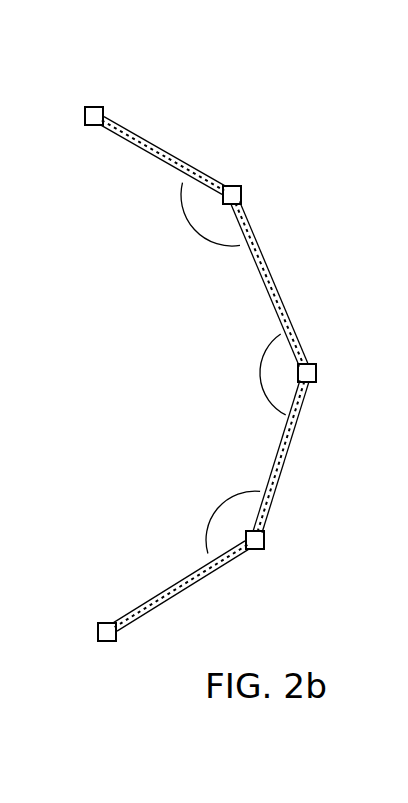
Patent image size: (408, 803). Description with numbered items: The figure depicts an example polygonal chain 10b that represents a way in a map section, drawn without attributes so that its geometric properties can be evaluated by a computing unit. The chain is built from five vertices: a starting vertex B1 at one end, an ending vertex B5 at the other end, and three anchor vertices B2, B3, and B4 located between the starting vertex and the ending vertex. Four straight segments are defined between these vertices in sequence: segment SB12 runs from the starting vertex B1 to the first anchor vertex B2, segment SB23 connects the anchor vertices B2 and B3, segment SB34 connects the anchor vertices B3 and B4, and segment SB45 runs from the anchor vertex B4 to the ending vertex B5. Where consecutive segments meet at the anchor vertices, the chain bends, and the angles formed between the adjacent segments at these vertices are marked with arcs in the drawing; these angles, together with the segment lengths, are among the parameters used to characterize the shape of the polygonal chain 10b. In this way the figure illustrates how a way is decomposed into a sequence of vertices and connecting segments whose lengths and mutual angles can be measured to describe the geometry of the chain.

The polygonal chain 10b is at (155, 358).
The starting vertex B1 is at (101, 650).
The anchor vertex B2 is at (264, 552).
The anchor vertex B3 is at (318, 364).
The anchor vertex B4 is at (241, 184).
The ending vertex B5 is at (97, 105).
The segment SB12 is at (192, 588).
The segment SB23 is at (287, 470).
The segment SB34 is at (283, 301).
The segment SB45 is at (188, 162).